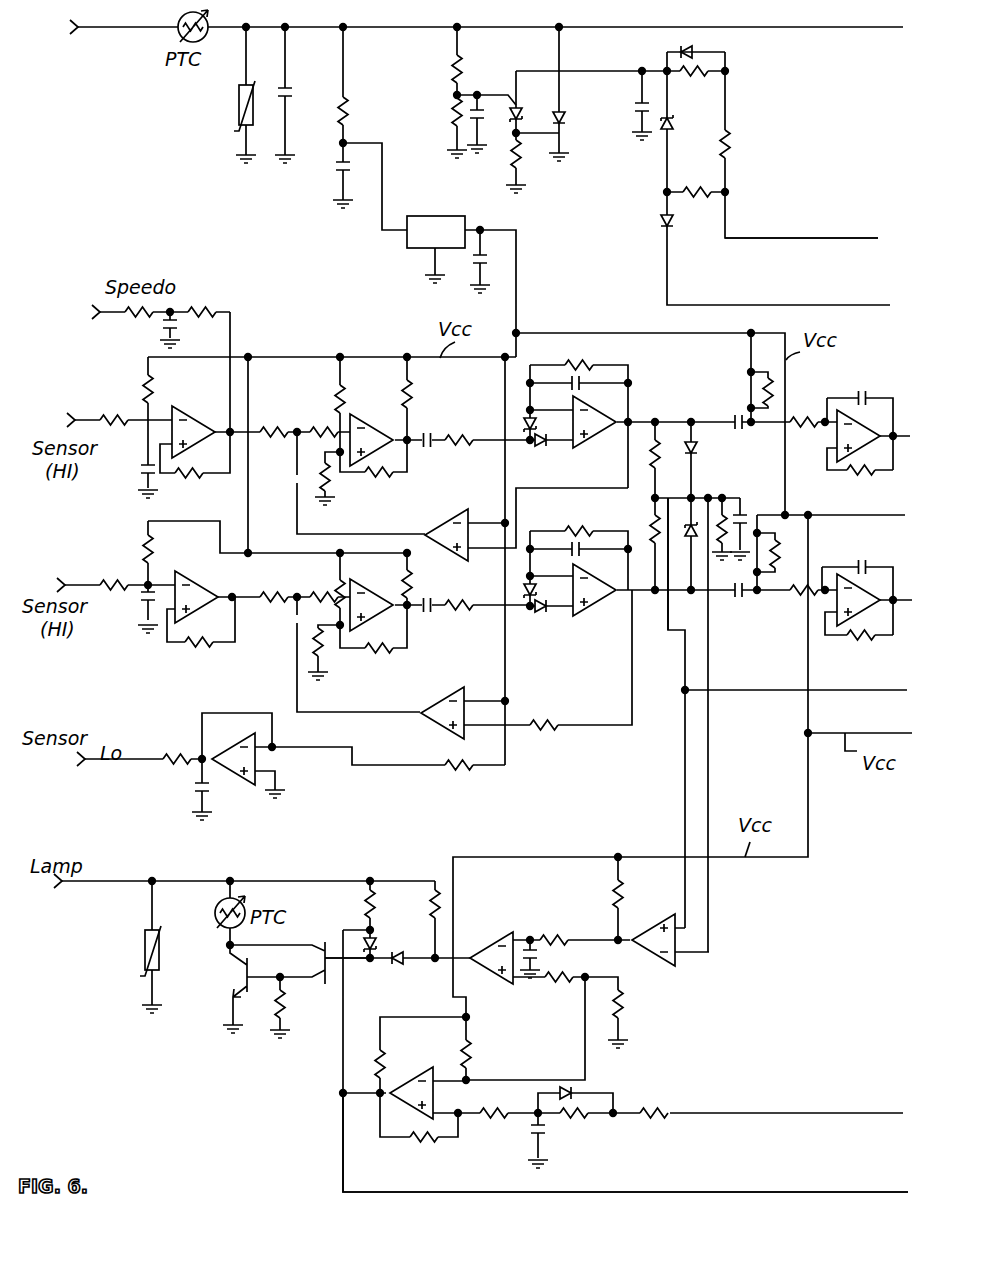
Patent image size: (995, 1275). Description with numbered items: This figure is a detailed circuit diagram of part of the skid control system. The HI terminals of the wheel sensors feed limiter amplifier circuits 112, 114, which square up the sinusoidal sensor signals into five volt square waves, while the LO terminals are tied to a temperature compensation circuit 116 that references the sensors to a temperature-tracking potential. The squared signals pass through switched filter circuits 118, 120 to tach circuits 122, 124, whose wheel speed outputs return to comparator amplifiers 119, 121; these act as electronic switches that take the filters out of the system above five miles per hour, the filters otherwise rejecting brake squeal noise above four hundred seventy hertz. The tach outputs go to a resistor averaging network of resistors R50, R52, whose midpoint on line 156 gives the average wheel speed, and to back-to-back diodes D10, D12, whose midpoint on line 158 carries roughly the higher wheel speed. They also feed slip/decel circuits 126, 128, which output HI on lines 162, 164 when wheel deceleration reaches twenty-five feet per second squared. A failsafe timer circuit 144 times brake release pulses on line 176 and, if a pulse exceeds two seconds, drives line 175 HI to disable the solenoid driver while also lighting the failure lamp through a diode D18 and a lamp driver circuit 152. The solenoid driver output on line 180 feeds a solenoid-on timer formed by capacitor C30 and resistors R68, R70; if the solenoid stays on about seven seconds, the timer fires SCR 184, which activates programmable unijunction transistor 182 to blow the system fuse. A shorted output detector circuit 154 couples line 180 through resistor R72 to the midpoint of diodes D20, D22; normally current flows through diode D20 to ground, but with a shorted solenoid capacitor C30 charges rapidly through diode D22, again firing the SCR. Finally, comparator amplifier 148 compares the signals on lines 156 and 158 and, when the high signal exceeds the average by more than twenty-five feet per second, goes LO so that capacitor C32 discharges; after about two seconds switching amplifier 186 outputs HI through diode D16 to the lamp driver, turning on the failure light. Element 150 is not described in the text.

The limiter amplifier circuit 112 is at (212, 395).
The limiter amplifier circuit 114 is at (199, 559).
The temperature compensation circuit 116 is at (242, 786).
The switched filter circuit 118 is at (400, 509).
The comparator amplifier 119 is at (446, 518).
The switched filter circuit 120 is at (397, 691).
The comparator amplifier 121 is at (450, 693).
The tach circuit 122 is at (589, 484).
The tach circuit 124 is at (589, 652).
The slip/decel circuit 126 is at (864, 390).
The slip/decel circuit 128 is at (882, 561).
The failsafe timer circuit 144 is at (505, 1158).
The comparator amplifier 148 is at (673, 968).
The resistor 150 is at (560, 908).
The lamp driver circuit 152 is at (232, 979).
The shorted output detector circuit 154 is at (654, 197).
The average wheel signal line 156 is at (682, 666).
The high wheel speed signal line 158 is at (697, 498).
The output line 162 is at (910, 436).
The output line 164 is at (911, 612).
The failsafe timer output line 175 is at (345, 1010).
The brake release pulse line 176 is at (785, 1113).
The solenoid driver output line 180 is at (826, 238).
The programmable unijunction transistor 182 is at (564, 130).
The SCR 184 is at (510, 120).
The switching amplifier 186 is at (500, 990).
The capacitor C30 is at (640, 102).
The capacitor C32 is at (540, 956).
The diode D10 is at (698, 452).
The diode D12 is at (690, 525).
The diode D16 is at (401, 955).
The diode D18 is at (374, 940).
The diode D20 is at (660, 229).
The diode D22 is at (672, 128).
The resistor R50 is at (657, 440).
The resistor R52 is at (652, 542).
The resistor R68 is at (716, 78).
The resistor R70 is at (730, 152).
The resistor R72 is at (696, 188).